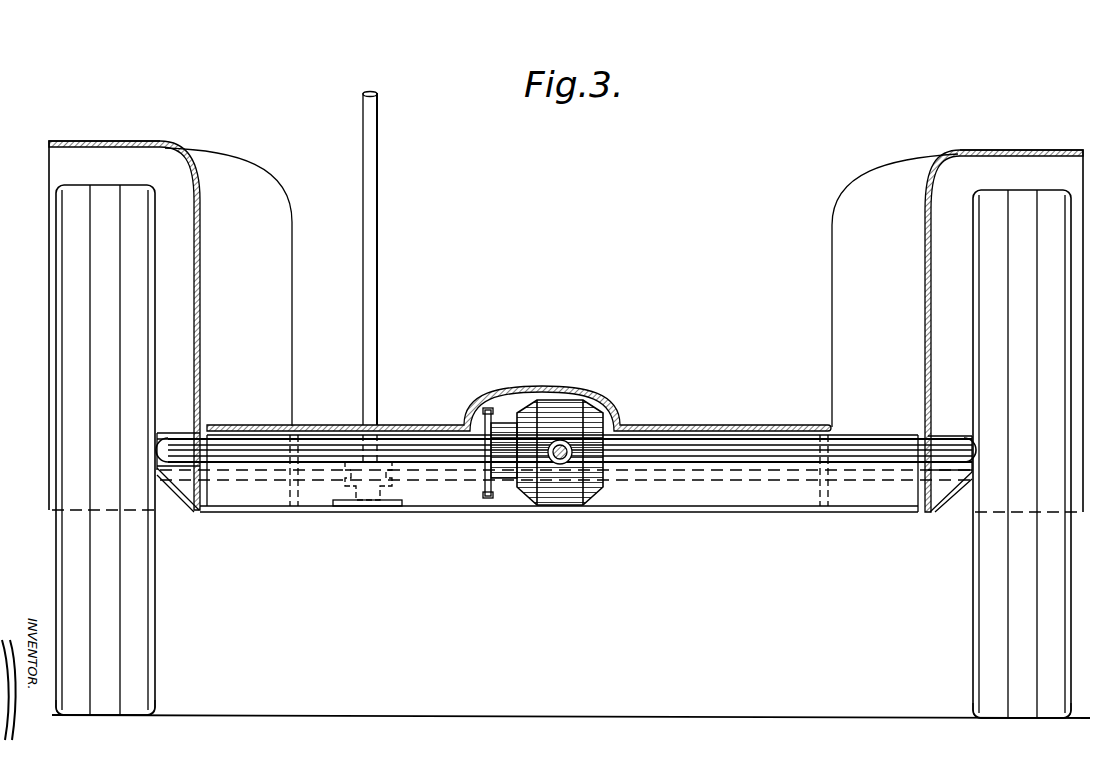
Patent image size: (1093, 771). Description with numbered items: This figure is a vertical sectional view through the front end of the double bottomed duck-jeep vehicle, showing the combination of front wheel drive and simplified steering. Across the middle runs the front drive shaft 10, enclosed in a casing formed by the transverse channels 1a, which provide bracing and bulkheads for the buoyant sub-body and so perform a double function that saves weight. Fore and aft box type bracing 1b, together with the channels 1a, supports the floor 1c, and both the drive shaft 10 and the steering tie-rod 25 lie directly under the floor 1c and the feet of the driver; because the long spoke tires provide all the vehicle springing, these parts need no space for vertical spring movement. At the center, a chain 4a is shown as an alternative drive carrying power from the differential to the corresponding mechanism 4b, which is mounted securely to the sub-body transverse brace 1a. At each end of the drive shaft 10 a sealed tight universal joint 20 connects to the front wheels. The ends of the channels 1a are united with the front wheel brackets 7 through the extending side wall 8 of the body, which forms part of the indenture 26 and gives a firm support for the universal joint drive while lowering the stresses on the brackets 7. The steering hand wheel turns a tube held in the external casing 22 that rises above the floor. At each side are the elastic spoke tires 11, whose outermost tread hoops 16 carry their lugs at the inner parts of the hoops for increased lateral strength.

The indenture 26 is at (140, 139).
The wall 8 is at (202, 396).
The elastic spoke tires 11 is at (63, 253).
The tread hoops 16 is at (143, 691).
The external casing 22 is at (386, 274).
The transverse channels 1a is at (666, 500).
The fore and aft box type bracing 1b is at (300, 512).
The floor 1c is at (519, 408).
The steering tie-rod 25 is at (283, 477).
The front drive shaft 10 is at (664, 455).
The universal joint 20 is at (162, 436).
The bracket 7 is at (182, 506).
The chain 4a is at (496, 410).
The corresponding mechanism 4b is at (567, 404).